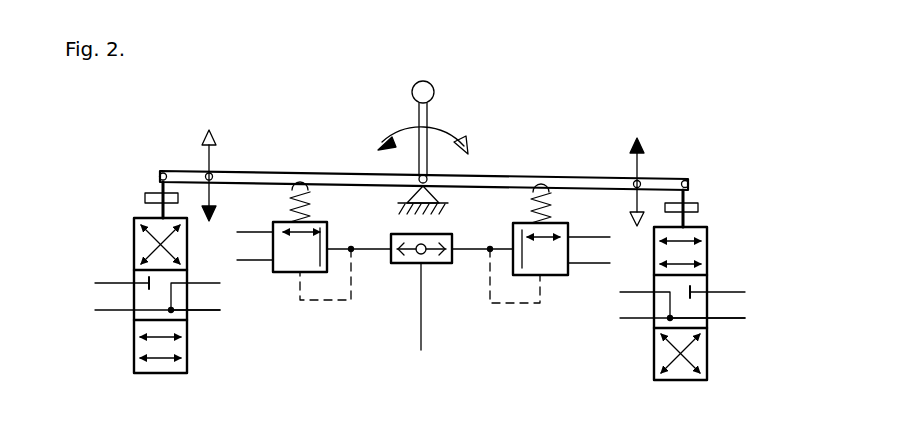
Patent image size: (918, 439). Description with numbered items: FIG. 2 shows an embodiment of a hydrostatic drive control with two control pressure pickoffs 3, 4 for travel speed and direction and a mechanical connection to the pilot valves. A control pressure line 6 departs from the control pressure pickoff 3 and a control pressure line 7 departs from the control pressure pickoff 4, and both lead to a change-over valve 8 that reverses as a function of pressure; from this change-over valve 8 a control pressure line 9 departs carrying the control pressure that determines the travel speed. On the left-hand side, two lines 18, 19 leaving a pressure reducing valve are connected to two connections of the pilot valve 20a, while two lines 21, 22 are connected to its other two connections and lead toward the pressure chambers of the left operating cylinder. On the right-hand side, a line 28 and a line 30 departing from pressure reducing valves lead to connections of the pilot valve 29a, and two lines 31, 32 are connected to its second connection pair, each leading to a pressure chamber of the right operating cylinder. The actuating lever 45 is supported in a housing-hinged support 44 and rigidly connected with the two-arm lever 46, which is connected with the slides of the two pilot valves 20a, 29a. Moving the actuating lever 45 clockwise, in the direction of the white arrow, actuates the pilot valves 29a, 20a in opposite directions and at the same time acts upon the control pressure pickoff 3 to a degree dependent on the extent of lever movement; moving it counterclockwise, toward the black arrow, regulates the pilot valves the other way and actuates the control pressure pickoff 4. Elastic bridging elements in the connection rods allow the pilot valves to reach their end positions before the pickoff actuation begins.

The control pressure pickoff 3 is at (515, 224).
The control pressure pickoff 4 is at (327, 222).
The control pressure line 6 is at (467, 253).
The control pressure line 7 is at (378, 252).
The change-over valve 8 is at (406, 264).
The control pressure line 9 is at (422, 330).
The line 18 is at (108, 283).
The line 19 is at (107, 310).
The pilot valve 20a is at (187, 370).
The line 21 is at (213, 266).
The line 22 is at (208, 314).
The line 28 is at (722, 292).
The pilot valve 29a is at (653, 356).
The line 30 is at (727, 322).
The line 31 is at (621, 292).
The line 32 is at (622, 318).
The housing-hinged support 44 is at (428, 172).
The actuating lever 45 is at (429, 105).
The two-arm lever 46 is at (293, 146).